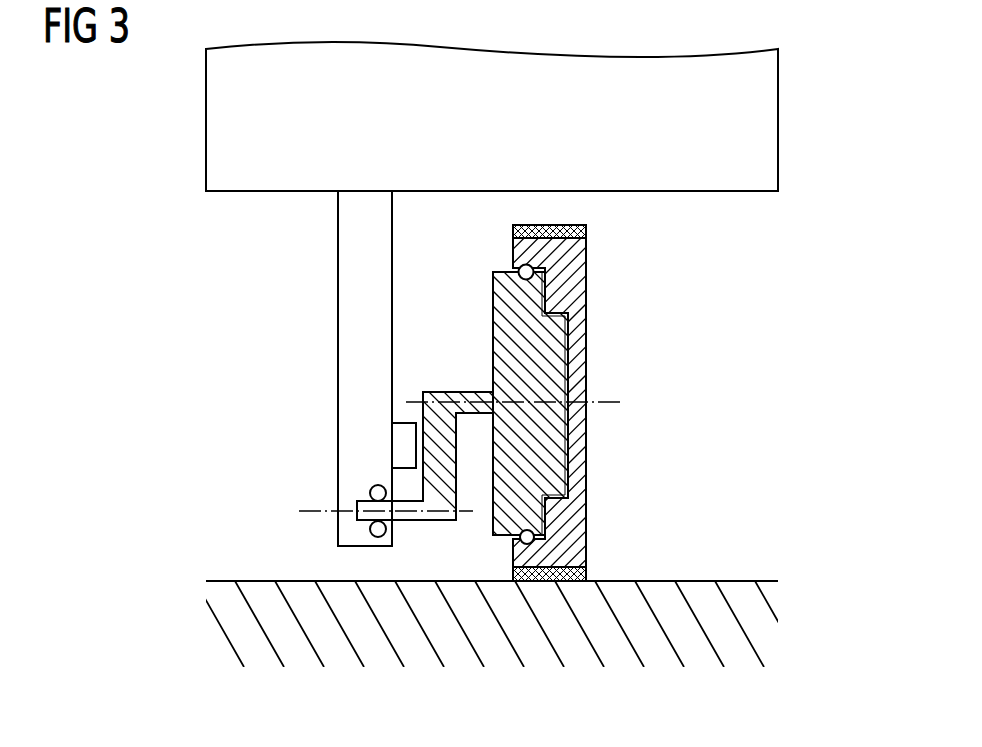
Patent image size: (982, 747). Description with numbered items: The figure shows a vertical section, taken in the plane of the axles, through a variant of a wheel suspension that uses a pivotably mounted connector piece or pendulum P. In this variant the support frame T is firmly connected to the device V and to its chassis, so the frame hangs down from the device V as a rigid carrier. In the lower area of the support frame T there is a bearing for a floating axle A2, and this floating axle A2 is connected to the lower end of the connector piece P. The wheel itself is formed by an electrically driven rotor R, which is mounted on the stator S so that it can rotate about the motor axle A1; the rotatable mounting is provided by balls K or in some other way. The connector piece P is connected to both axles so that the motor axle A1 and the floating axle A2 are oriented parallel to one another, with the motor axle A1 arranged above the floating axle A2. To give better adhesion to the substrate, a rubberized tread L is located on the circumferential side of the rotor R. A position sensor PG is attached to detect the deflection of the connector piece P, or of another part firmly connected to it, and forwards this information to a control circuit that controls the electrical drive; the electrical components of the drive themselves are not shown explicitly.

The device V is at (778, 118).
The support frame T is at (338, 258).
The rubberized tread L is at (582, 226).
The rotor R is at (586, 280).
The balls K is at (512, 271).
The stator S is at (494, 327).
The connector piece P is at (462, 484).
The position sensor PG is at (403, 440).
The motor axle A1 is at (614, 402).
The floating axle A2 is at (427, 520).